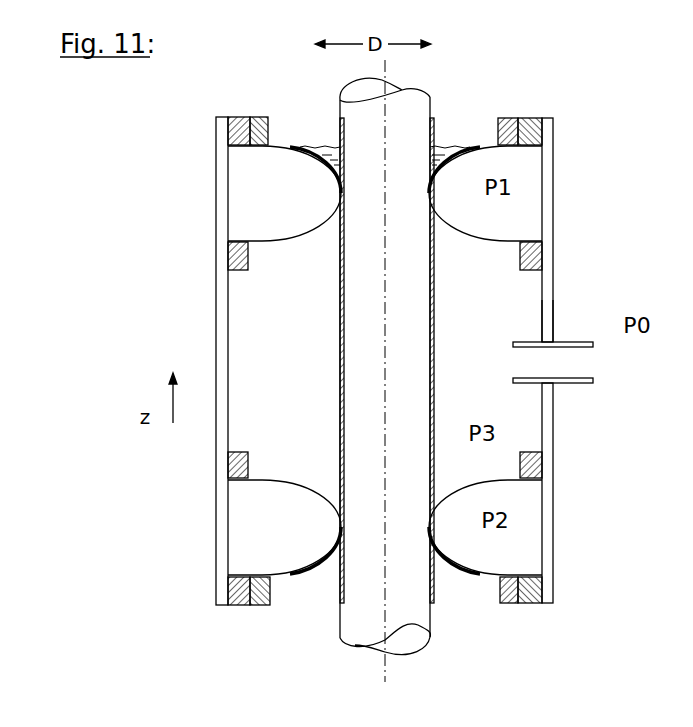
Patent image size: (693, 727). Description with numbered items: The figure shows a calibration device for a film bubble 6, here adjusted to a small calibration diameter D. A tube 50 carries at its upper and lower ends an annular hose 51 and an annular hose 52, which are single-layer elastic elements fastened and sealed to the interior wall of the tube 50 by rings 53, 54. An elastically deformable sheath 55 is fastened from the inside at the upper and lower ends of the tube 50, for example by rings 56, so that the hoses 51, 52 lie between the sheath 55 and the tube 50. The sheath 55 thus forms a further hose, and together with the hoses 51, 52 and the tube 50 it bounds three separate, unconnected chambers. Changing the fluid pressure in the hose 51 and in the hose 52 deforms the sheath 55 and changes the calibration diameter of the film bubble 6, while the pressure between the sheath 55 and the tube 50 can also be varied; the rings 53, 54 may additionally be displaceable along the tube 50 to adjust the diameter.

The film bubble 6 is at (431, 120).
The tube 50 is at (555, 312).
The annular hose 51 is at (500, 237).
The annular hose 52 is at (508, 483).
The ring 53 is at (543, 127).
The ring 54 is at (543, 258).
The elastically deformable sheath 55 is at (434, 415).
The ring 56 is at (507, 117).